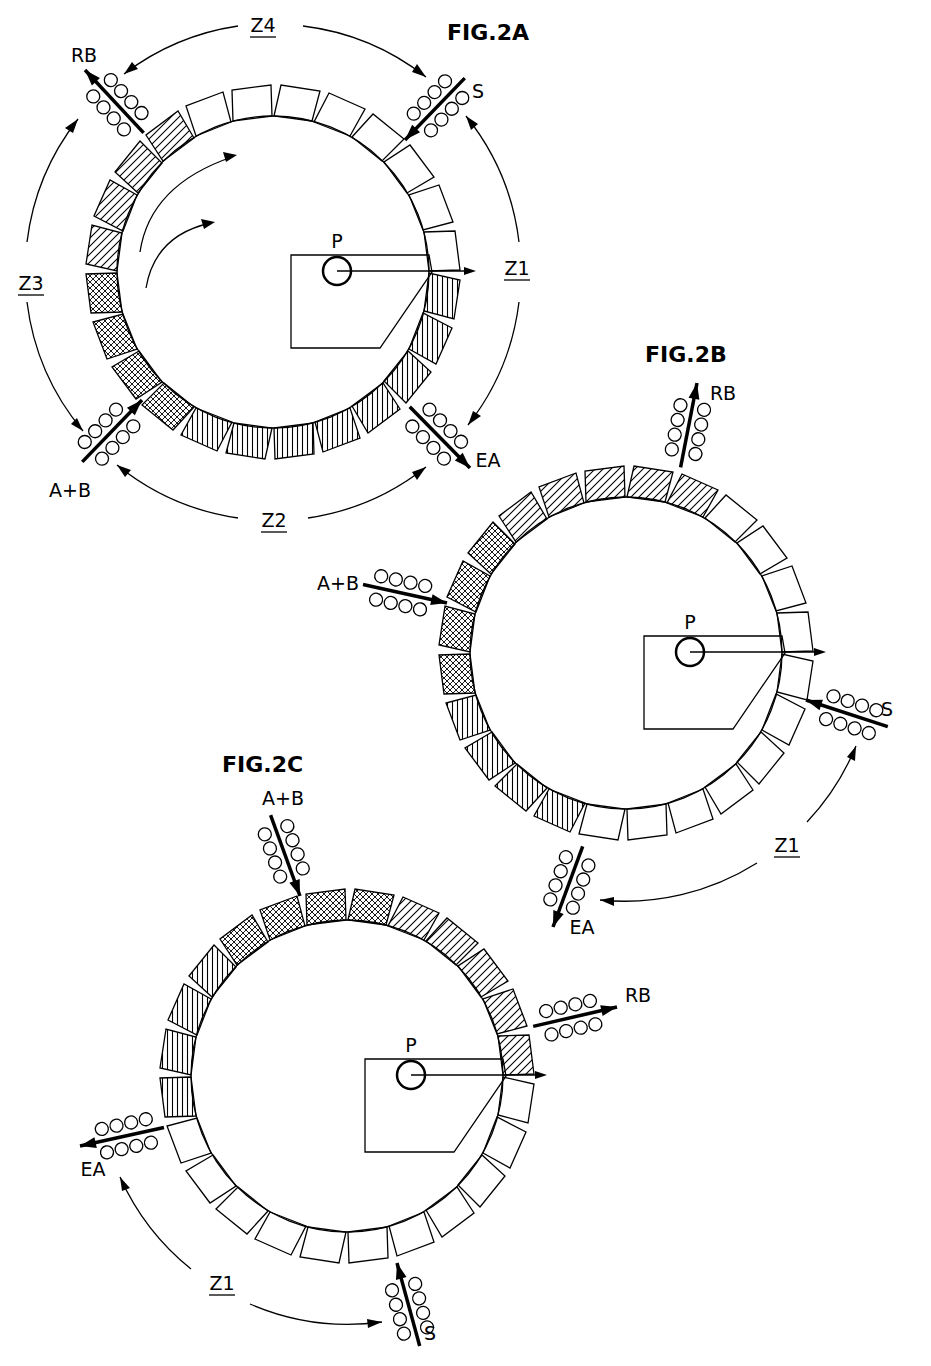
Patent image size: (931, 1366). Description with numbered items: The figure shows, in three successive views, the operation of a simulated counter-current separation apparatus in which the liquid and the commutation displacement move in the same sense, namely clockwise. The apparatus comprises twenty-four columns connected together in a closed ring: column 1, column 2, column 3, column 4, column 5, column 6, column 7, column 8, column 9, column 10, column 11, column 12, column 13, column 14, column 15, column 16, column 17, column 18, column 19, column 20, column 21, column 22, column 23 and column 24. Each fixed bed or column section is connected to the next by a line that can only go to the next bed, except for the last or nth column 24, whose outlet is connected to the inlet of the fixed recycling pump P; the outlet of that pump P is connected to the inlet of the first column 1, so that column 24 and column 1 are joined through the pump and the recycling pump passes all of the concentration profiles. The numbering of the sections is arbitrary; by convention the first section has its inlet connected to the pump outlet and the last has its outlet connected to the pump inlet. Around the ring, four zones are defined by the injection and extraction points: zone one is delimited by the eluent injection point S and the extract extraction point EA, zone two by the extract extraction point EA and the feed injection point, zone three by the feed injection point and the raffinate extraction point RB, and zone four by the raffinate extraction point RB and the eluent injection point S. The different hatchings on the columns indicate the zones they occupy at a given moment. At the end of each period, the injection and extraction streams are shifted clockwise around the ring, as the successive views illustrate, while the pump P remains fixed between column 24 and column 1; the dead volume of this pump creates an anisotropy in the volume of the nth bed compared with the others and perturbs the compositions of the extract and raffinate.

In FIG. 2A, the column 1 is at (454, 296).
In FIG. 2B, the column 1 is at (812, 677).
In FIG. 2C, the column 1 is at (532, 1104).
In FIG. 2A, the column 2 is at (442, 342).
In FIG. 2A, the column 3 is at (418, 383).
In FIG. 2A, the column 4 is at (384, 417).
In FIG. 2A, the column 5 is at (343, 441).
In FIG. 2A, the column 6 is at (297, 453).
In FIG. 2A, the column 7 is at (249, 453).
In FIG. 2A, the column 8 is at (203, 441).
In FIG. 2A, the column 9 is at (162, 417).
In FIG. 2A, the column 10 is at (128, 383).
In FIG. 2A, the column 11 is at (104, 342).
In FIG. 2A, the column 12 is at (92, 296).
In FIG. 2A, the column 13 is at (92, 248).
In FIG. 2A, the column 14 is at (104, 202).
In FIG. 2A, the column 15 is at (128, 161).
In FIG. 2A, the column 16 is at (162, 127).
In FIG. 2A, the column 17 is at (203, 103).
In FIG. 2A, the column 18 is at (249, 91).
In FIG. 2A, the column 19 is at (297, 91).
In FIG. 2A, the column 20 is at (343, 103).
In FIG. 2A, the column 21 is at (384, 127).
In FIG. 2A, the column 22 is at (418, 161).
In FIG. 2A, the column 23 is at (442, 202).
In FIG. 2A, the column 24 is at (454, 248).
In FIG. 2B, the column 24 is at (812, 633).
In FIG. 2C, the column 24 is at (533, 1070).